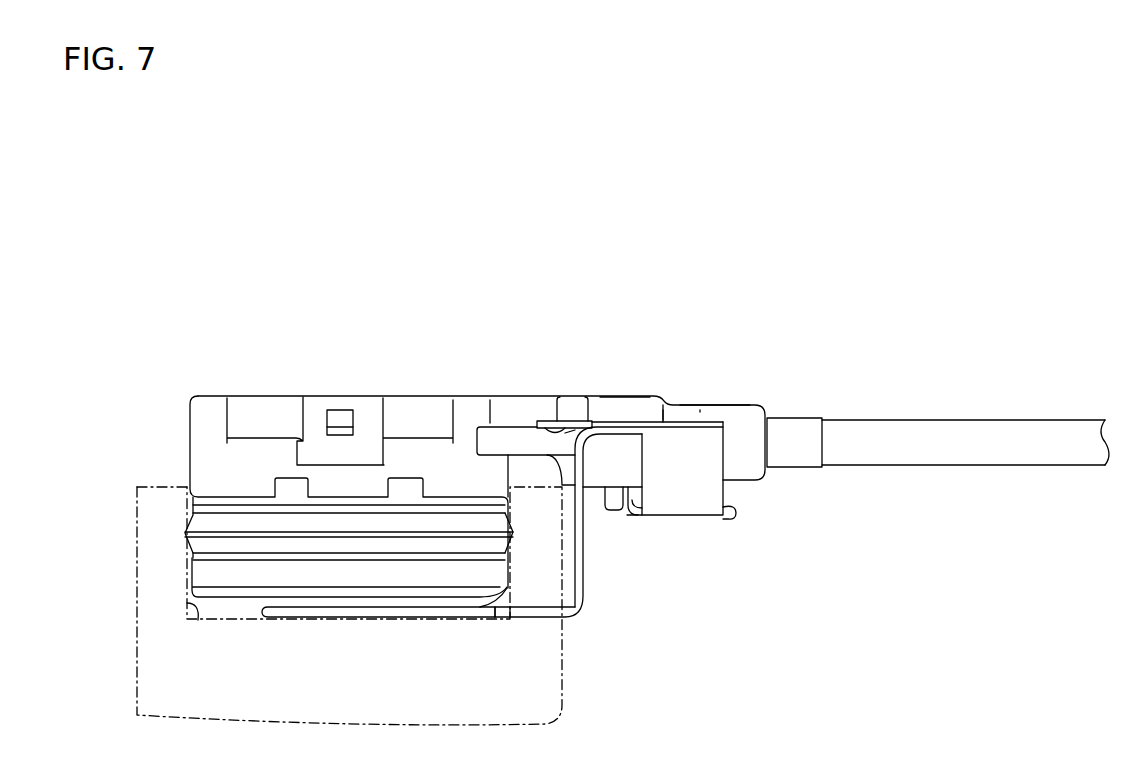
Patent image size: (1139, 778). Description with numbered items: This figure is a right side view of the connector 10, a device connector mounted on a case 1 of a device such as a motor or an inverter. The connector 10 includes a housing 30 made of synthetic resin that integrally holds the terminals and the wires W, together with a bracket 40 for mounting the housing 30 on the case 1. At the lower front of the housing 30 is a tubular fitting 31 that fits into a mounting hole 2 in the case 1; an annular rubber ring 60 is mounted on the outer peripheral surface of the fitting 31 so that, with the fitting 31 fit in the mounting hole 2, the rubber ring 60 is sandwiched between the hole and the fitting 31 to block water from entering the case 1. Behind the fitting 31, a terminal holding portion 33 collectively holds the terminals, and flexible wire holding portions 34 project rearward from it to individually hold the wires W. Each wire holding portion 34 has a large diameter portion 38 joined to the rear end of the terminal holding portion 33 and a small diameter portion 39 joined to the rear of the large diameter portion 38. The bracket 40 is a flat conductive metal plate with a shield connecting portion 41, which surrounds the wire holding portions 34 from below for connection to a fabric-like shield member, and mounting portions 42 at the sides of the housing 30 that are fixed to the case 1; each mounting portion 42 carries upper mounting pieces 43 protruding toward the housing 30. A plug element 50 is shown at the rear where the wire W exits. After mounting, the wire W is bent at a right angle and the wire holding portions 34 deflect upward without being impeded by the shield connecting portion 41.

The connector 10 is at (588, 220).
The housing 30 is at (213, 410).
The terminal holding portion 33 is at (522, 402).
The upper mounting piece 43 is at (545, 420).
The wire holding portion 34 is at (724, 313).
The large diameter portion 38 is at (638, 408).
The small diameter portion 39 is at (710, 405).
The rubber plug 50 is at (800, 440).
The wire W is at (917, 437).
The case 1 is at (137, 523).
The rubber ring 60 is at (197, 540).
The fitting 31 is at (202, 575).
The mounting hole 2 is at (193, 623).
The bracket 40 is at (682, 508).
The shield connecting portion 41 is at (737, 516).
The mounting portion 42 is at (545, 613).